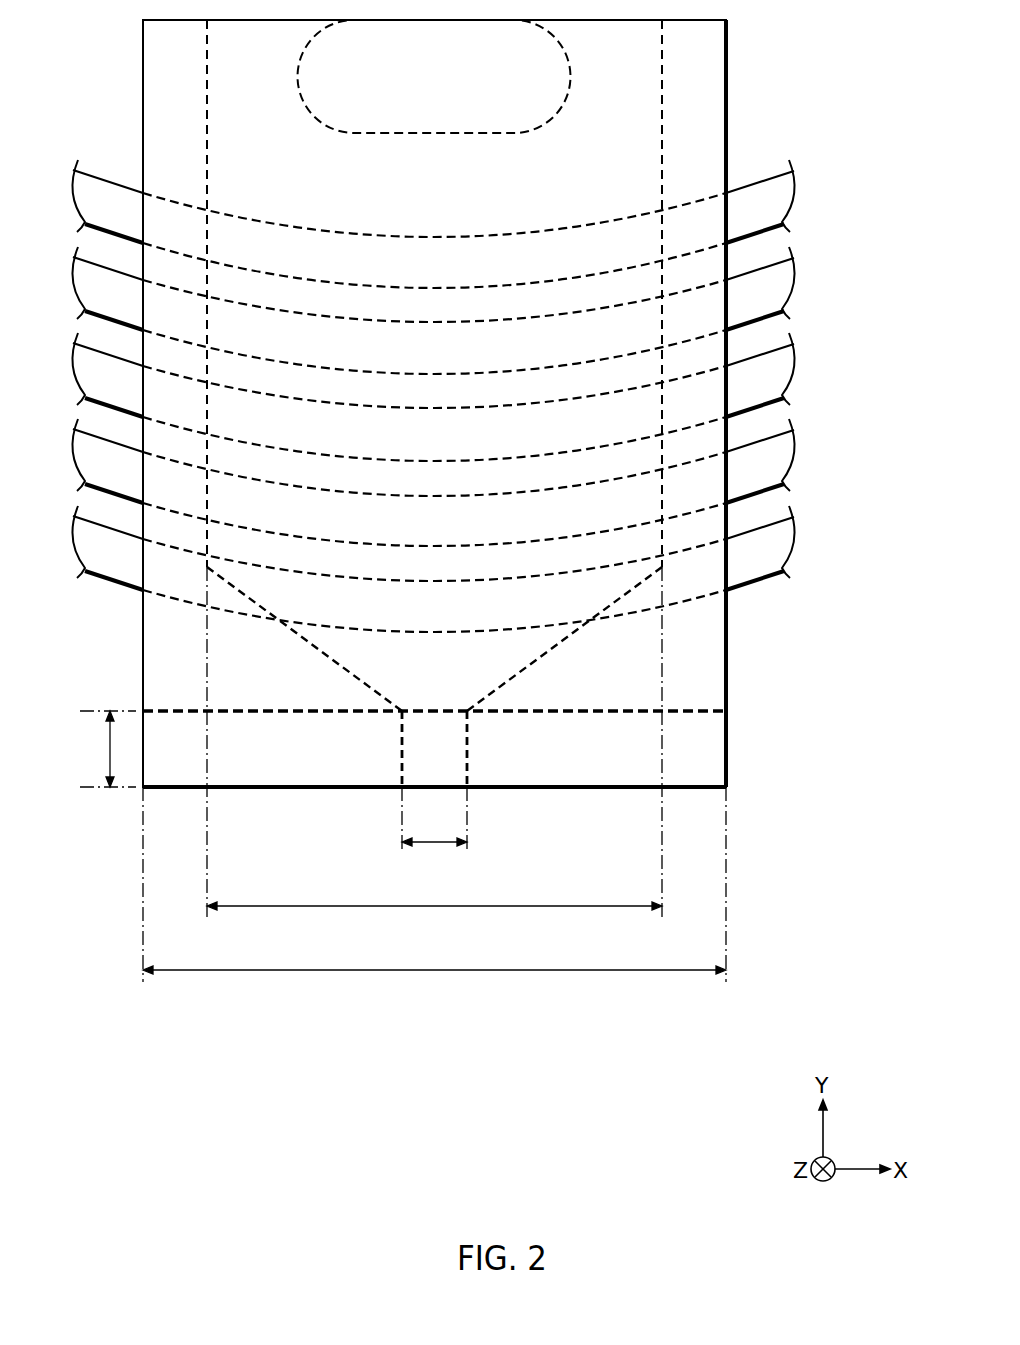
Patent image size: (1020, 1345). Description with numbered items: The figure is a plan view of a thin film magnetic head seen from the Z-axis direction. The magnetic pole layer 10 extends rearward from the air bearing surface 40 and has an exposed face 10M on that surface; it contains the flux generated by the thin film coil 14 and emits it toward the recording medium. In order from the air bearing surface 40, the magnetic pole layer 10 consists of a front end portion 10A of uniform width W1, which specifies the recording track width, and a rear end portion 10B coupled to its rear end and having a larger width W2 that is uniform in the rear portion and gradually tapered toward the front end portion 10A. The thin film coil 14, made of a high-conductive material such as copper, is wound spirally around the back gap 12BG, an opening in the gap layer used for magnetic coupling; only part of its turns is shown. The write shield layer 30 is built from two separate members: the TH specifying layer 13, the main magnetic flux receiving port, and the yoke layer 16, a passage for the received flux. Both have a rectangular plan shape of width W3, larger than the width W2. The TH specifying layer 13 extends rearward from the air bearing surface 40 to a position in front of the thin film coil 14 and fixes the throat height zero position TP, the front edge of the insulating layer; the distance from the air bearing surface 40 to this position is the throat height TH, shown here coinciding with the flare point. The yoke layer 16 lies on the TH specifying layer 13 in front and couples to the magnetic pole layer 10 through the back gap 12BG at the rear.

The back gap 12BG is at (326, 62).
The thin film coil 14 is at (108, 198).
The magnetic pole layer 10 is at (546, 677).
The front end portion 10A is at (447, 753).
The rear end portion 10B is at (515, 656).
The exposed face 10M is at (450, 800).
The write shield layer 30 is at (514, 422).
The yoke layer 16 is at (713, 735).
The TH specifying layer 13 is at (713, 768).
The air bearing surface 40 is at (287, 800).
The throat height zero position TP is at (60, 711).
The throat height TH is at (103, 749).
The width of the front end portion W1 is at (431, 843).
The width of the rear end portion W2 is at (431, 907).
The width of the TH specifying layer and yoke layer W3 is at (431, 971).